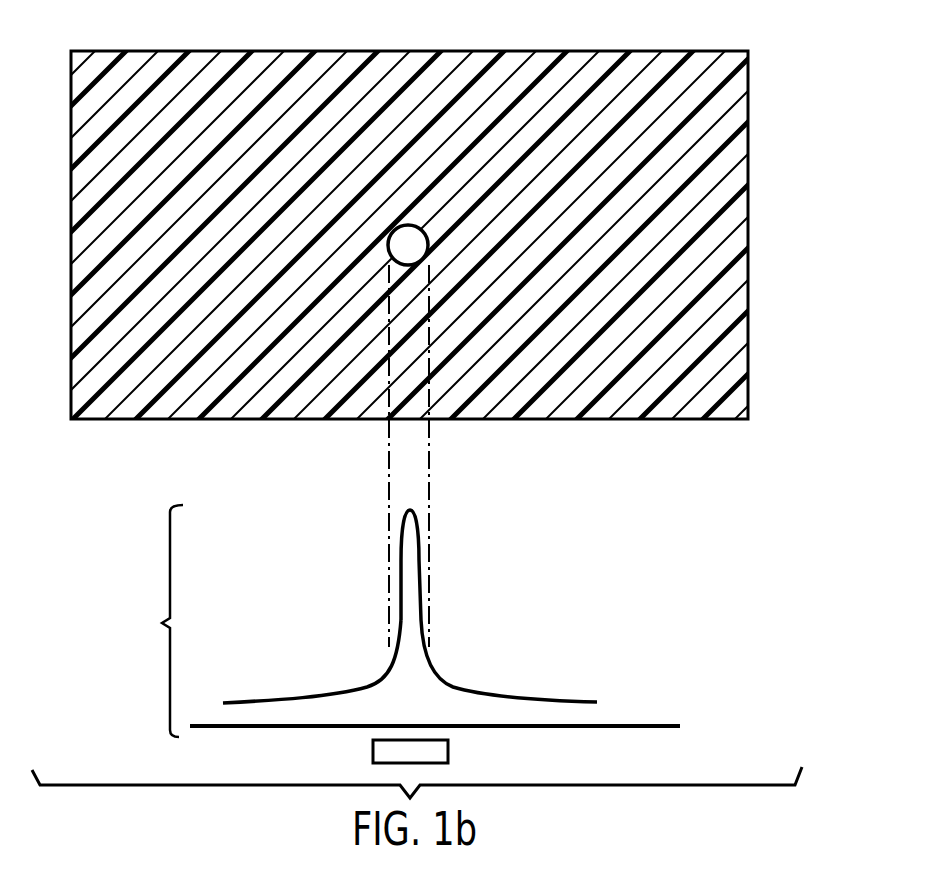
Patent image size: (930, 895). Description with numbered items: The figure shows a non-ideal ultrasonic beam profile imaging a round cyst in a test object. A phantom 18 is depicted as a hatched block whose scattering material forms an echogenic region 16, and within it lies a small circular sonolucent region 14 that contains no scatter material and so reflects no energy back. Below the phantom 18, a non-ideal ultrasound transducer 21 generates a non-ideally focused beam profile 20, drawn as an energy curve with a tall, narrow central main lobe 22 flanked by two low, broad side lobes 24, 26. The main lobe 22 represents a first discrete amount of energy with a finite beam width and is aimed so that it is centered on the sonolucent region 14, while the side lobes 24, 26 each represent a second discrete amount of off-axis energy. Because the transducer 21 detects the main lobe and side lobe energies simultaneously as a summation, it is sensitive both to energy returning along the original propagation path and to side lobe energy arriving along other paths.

The sonolucent region 14 is at (405, 237).
The echogenic region 16 is at (740, 110).
The phantom 18 is at (782, 259).
The non-ideally focused beam profile 20 is at (362, 621).
The non-ideal ultrasound transducer 21 is at (450, 753).
The central main lobe 22 is at (422, 565).
The side lobe 24 is at (307, 698).
The side lobe 26 is at (517, 698).